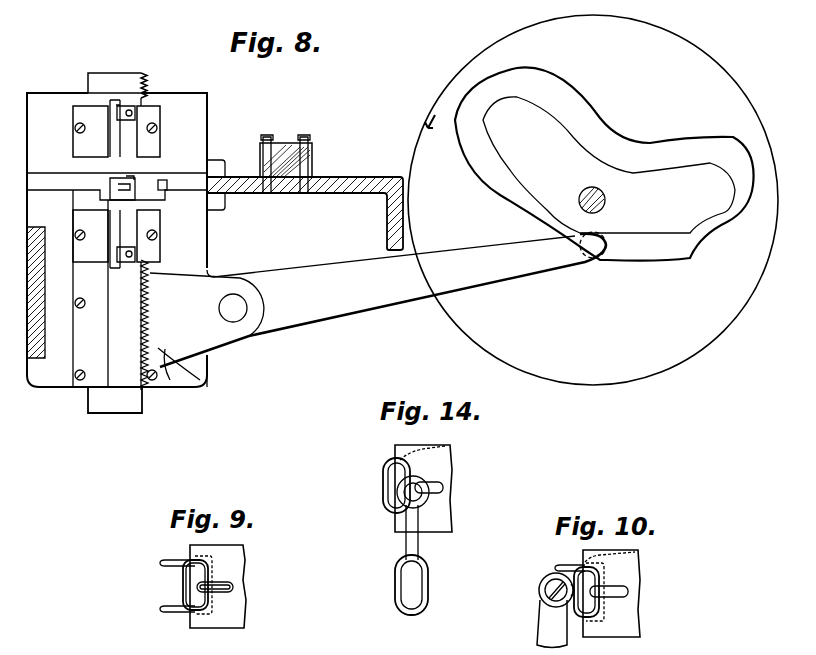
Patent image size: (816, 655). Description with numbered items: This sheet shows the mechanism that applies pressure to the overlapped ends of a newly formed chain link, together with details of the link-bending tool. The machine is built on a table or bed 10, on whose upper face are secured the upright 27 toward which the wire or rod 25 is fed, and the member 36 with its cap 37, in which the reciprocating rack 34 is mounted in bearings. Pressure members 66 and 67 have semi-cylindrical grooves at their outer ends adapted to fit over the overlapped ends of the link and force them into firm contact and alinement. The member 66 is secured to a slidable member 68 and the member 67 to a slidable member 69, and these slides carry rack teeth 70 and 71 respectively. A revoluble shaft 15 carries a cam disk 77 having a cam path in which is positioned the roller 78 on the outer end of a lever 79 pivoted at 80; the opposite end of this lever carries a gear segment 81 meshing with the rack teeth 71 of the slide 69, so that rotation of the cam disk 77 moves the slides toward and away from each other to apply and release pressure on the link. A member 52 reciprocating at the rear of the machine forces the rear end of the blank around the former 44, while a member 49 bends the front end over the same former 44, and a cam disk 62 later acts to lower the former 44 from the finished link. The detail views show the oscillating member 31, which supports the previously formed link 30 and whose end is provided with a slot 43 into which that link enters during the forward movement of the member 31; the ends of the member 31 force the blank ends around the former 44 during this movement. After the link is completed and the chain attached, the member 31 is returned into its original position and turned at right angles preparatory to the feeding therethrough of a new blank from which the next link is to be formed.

In FIG. 8, the table or bed 10 is at (325, 192).
In FIG. 8, the revoluble shaft 15 is at (592, 190).
In FIG. 8, the wire or rod 25 is at (165, 178).
In FIG. 8, the upright 27 is at (195, 108).
In FIG. 9, the previously formed link 30 is at (233, 586).
In FIG. 14, the previously formed link 30 is at (386, 468).
In FIG. 9, the oscillating member 31 is at (238, 556).
In FIG. 14, the oscillating member 31 is at (440, 462).
In FIG. 10, the oscillating member 31 is at (630, 576).
In FIG. 8, the reciprocating rack 34 is at (284, 150).
In FIG. 8, the member 36 is at (312, 167).
In FIG. 8, the cap 37 is at (313, 143).
In FIG. 9, the slot 43 is at (232, 598).
In FIG. 14, the slot 43 is at (440, 488).
In FIG. 10, the slot 43 is at (630, 600).
In FIG. 9, the former 44 is at (192, 583).
In FIG. 10, the former 44 is at (584, 575).
In FIG. 10, the member 49 is at (540, 627).
In FIG. 8, the member 52 is at (137, 196).
In FIG. 14, the cam disk 62 is at (425, 450).
In FIG. 10, the cam disk 62 is at (638, 557).
In FIG. 8, the pressure member 66 is at (113, 140).
In FIG. 8, the pressure member 67 is at (113, 222).
In FIG. 8, the slidable member 68 is at (117, 86).
In FIG. 8, the slidable member 69 is at (121, 392).
In FIG. 8, the rack teeth 70 is at (147, 84).
In FIG. 8, the rack teeth 71 is at (138, 400).
In FIG. 8, the cam disk 77 is at (695, 353).
In FIG. 8, the roller 78 is at (582, 258).
In FIG. 8, the lever 79 is at (338, 308).
In FIG. 8, the pivot 80 is at (237, 312).
In FIG. 8, the gear segment 81 is at (165, 350).